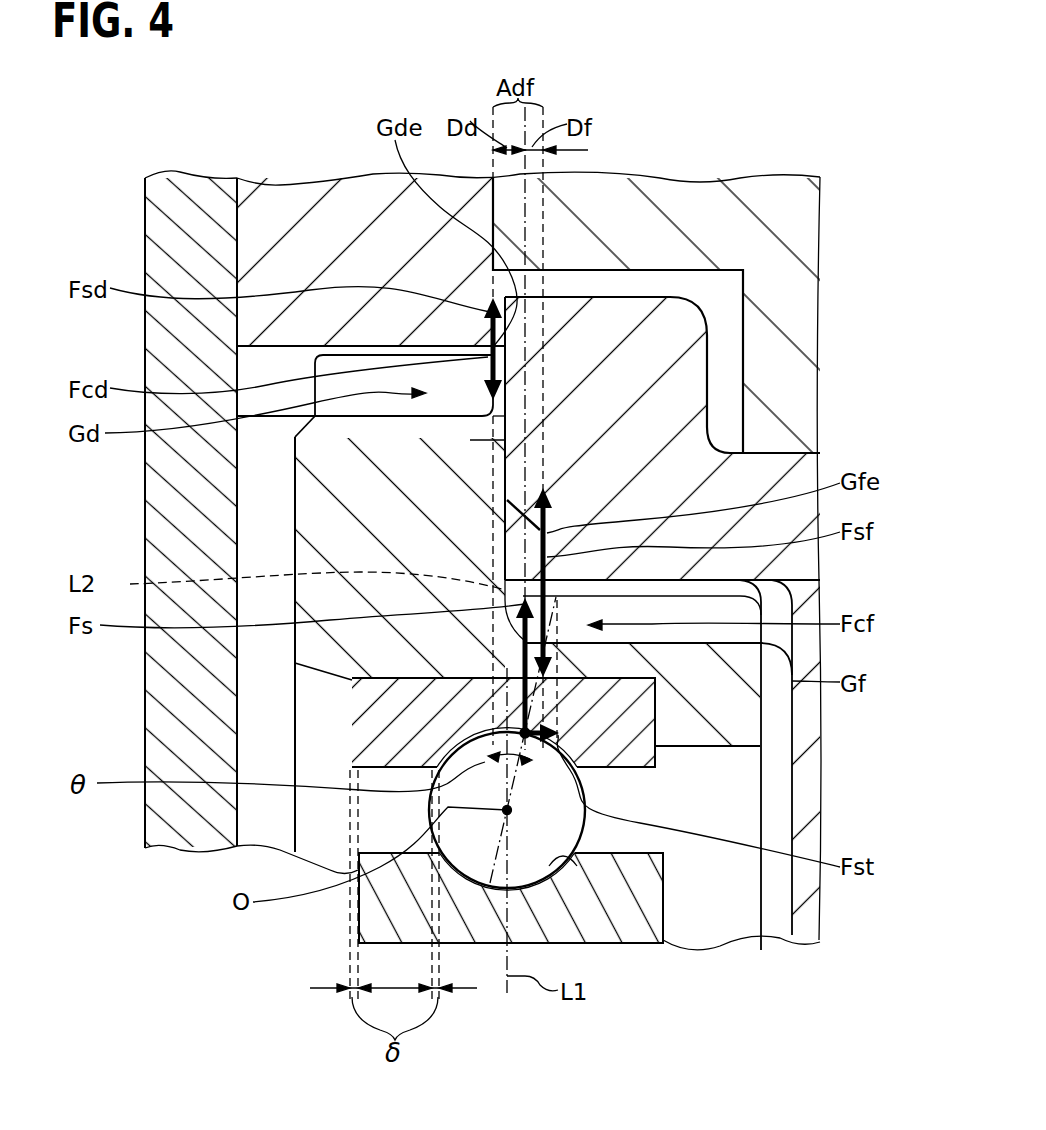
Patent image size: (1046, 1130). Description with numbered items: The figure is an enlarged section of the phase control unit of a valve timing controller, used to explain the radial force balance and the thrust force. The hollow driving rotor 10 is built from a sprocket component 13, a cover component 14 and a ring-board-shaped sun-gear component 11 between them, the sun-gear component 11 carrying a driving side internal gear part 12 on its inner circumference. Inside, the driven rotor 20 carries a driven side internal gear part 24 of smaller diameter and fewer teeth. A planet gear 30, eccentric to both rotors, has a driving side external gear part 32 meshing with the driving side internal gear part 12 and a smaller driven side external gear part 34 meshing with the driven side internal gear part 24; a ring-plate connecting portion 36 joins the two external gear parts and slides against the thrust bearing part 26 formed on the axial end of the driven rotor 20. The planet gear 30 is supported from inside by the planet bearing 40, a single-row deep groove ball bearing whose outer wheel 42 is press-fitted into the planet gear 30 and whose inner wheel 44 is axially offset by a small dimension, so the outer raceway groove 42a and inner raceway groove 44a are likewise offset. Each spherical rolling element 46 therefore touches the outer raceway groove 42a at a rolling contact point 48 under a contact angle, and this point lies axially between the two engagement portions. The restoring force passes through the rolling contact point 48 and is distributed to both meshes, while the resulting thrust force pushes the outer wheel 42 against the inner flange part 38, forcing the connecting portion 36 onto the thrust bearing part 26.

The driving rotor 10 is at (753, 181).
The sun-gear component 11 is at (263, 230).
The driving side internal gear part 12 is at (313, 352).
The sprocket component 13 is at (780, 223).
The cover component 14 is at (177, 240).
The driven rotor 20 is at (703, 440).
The driven side internal gear part 24 is at (585, 690).
The thrust bearing part 26 is at (500, 440).
The planet gear 30 is at (350, 680).
The driving side external gear part 32 is at (490, 413).
The driven side external gear part 34 is at (737, 592).
The connecting portion 36 is at (507, 470).
The inner flange part 38 is at (703, 730).
The planet bearing 40 is at (648, 943).
The outer wheel 42 is at (373, 720).
The outer raceway groove 42a is at (548, 745).
The inner wheel 44 is at (382, 908).
The inner raceway groove 44a is at (620, 912).
The spherical rolling element 46 is at (415, 822).
The rolling contact point 48 is at (495, 672).